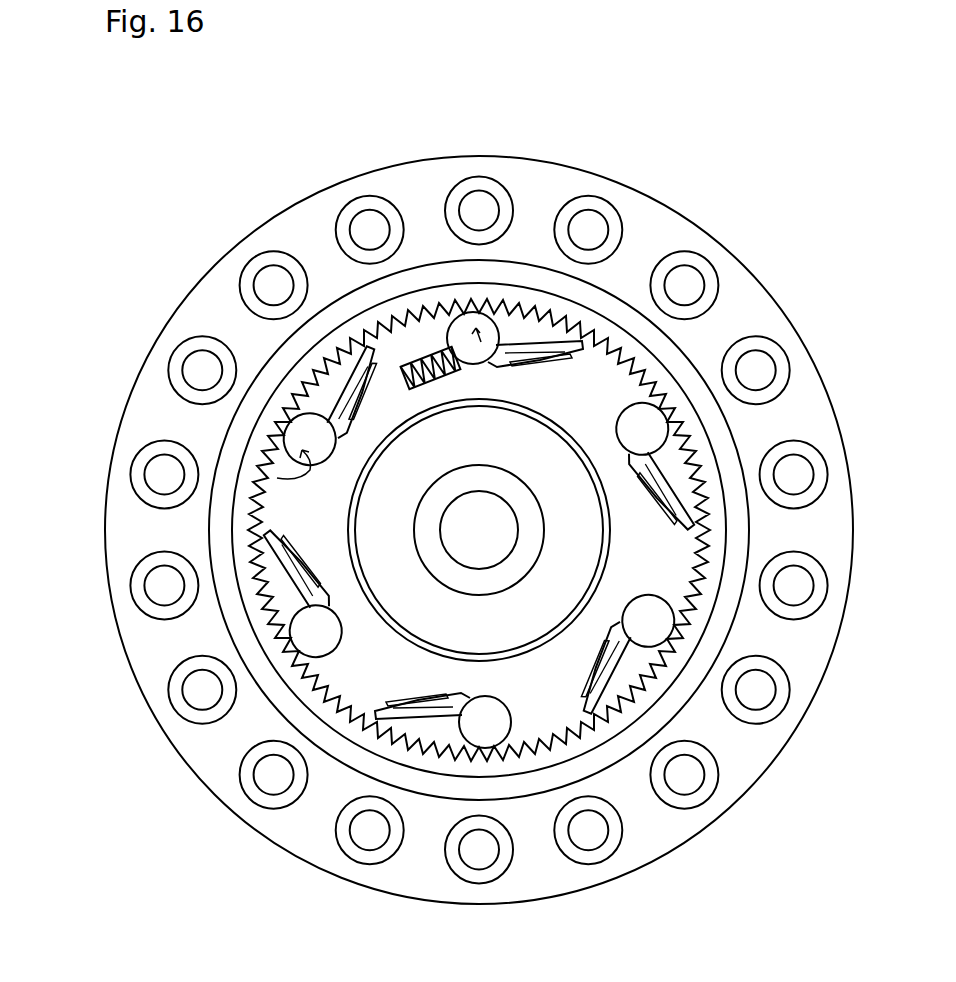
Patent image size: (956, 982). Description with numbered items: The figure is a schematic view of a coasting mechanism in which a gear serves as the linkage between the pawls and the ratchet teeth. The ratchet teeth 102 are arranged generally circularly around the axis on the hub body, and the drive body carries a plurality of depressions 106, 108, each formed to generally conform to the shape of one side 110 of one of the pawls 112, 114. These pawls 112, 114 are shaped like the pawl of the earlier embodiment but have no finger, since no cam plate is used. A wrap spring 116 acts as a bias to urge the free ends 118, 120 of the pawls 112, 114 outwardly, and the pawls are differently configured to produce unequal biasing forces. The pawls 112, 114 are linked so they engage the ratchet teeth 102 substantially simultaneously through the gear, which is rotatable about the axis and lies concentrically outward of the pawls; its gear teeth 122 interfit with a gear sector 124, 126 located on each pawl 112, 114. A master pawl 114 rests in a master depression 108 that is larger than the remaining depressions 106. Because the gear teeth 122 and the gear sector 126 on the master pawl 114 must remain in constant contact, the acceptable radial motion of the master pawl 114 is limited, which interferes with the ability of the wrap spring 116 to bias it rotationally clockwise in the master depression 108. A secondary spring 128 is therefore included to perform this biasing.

The ratchet teeth 102 is at (428, 317).
The depressions 106 is at (368, 345).
The master depression 108 is at (592, 355).
The side of pawl 110 is at (316, 360).
The pawl 112 is at (318, 385).
The master pawl 114 is at (537, 327).
The wrap spring 116 is at (293, 555).
The free end of pawl 118 is at (322, 350).
The free end of master pawl 120 is at (568, 325).
The gear teeth 122 is at (408, 357).
The gear sector 124 is at (277, 478).
The gear sector of master pawl 126 is at (511, 335).
The secondary spring 128 is at (447, 362).